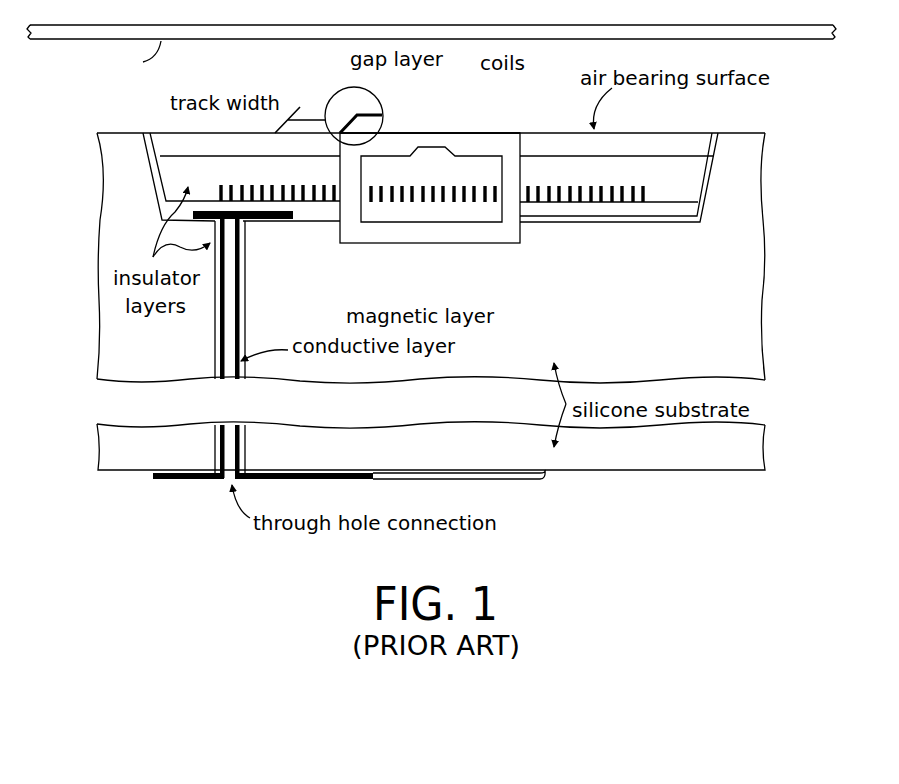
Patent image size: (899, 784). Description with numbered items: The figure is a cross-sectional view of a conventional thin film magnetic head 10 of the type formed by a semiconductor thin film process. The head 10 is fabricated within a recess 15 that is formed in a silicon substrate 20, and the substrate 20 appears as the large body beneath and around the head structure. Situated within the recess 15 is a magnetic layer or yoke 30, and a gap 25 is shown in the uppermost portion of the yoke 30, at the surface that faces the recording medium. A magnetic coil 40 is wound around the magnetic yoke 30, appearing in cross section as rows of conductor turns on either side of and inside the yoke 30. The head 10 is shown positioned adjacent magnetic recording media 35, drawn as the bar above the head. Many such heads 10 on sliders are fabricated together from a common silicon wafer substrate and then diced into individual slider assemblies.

The head 10 is at (87, 133).
The recess 15 is at (705, 207).
The silicon substrate 20 is at (723, 320).
The gap 25 is at (432, 131).
The magnetic layer or yoke 30 is at (389, 252).
The magnetic recording media 35 is at (167, 41).
The magnetic coil 40 is at (548, 183).